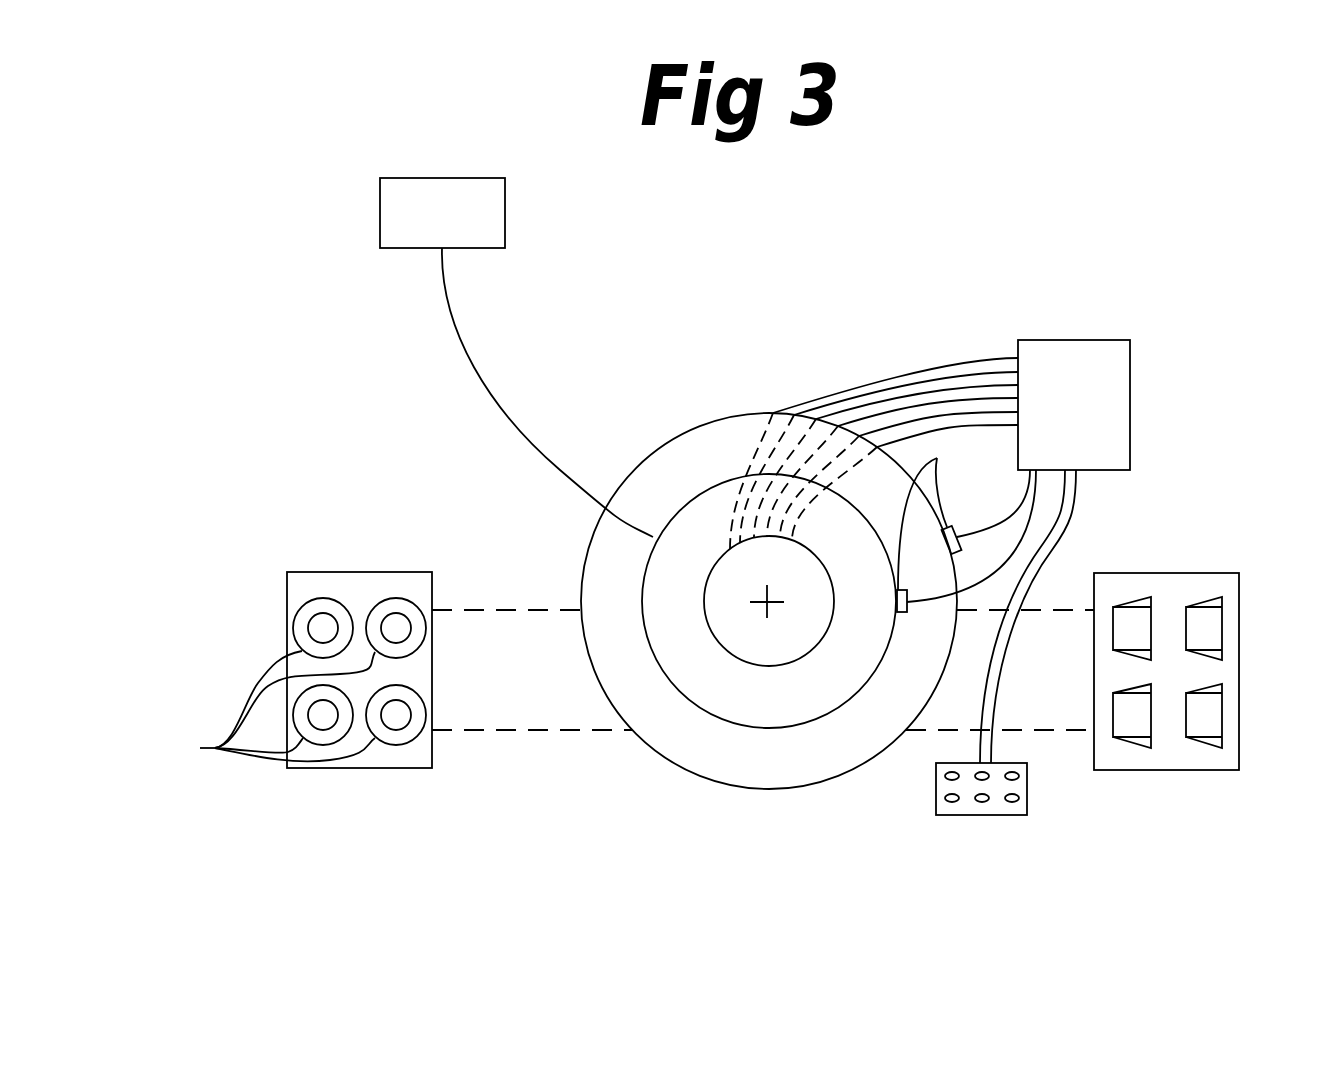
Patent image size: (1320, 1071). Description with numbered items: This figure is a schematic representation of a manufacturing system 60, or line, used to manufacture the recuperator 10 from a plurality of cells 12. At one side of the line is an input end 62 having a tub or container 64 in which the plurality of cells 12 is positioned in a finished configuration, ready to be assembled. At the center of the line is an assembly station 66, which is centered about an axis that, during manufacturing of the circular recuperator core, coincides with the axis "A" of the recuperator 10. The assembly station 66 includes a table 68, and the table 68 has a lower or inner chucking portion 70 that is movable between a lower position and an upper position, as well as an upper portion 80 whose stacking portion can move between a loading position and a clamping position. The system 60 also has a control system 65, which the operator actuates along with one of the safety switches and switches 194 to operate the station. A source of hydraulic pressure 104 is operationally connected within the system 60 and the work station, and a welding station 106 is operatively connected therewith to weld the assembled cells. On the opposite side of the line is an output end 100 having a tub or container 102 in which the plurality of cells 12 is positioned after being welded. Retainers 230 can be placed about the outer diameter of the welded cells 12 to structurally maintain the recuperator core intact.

The control system 65 is at (1127, 137).
The manufacturing system 60 is at (880, 262).
The upper portion 80 is at (657, 450).
The assembly station 66 is at (676, 380).
The lower or inner chucking portion 70 is at (760, 595).
The table 68 is at (750, 412).
The source of hydraulic pressure 104 is at (1073, 340).
The safety switches and switches 194 is at (937, 458).
The welding station 106 is at (470, 228).
The output end 100 is at (495, 507).
The tub or container 102 is at (368, 768).
The recuperator 10 is at (398, 597).
The retainer 230 is at (254, 710).
The cells 12 is at (1205, 607).
The input end 62 is at (1163, 543).
The tub or container 64 is at (1193, 770).
The axis A is at (763, 604).